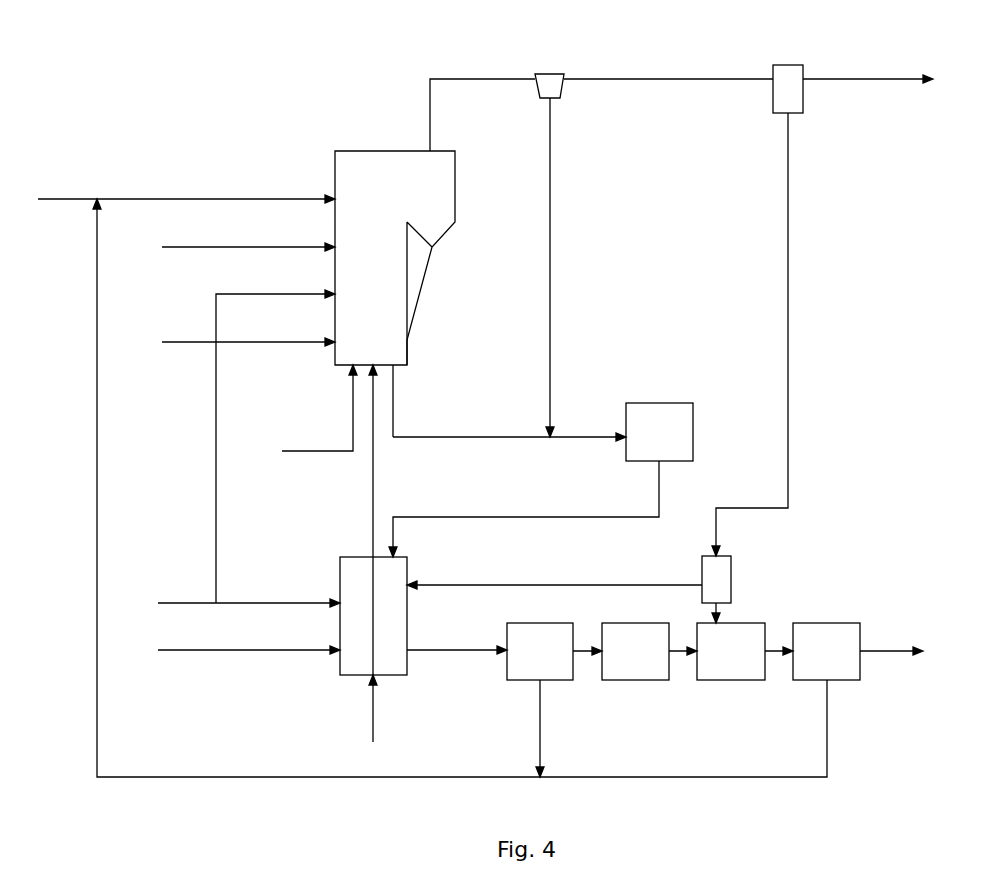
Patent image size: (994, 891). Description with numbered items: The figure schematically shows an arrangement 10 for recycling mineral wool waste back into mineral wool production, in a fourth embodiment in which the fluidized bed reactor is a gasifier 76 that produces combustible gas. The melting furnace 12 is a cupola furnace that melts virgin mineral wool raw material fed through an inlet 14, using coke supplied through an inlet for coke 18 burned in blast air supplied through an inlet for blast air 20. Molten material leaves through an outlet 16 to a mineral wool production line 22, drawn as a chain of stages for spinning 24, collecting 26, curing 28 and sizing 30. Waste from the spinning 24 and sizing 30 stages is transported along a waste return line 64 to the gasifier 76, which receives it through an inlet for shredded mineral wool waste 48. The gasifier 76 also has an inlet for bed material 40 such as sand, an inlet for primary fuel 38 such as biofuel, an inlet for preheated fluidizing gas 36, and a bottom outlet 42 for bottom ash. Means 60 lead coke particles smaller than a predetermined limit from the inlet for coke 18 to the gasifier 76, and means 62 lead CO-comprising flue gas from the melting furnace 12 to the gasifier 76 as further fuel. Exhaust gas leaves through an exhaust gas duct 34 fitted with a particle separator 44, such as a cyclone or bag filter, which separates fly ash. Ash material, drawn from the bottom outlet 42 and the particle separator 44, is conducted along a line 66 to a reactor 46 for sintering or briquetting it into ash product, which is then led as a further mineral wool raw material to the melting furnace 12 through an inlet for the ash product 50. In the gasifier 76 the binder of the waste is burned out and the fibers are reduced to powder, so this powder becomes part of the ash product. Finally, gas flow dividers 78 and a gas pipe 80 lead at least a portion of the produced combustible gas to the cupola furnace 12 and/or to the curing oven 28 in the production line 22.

The arrangement 10 is at (258, 100).
The melting furnace 12 is at (373, 616).
The inlet for virgin mineral wool raw material 14 is at (255, 655).
The outlet for molten mineral wool material 16 is at (470, 655).
The inlet for coke 18 is at (308, 602).
The inlet for blast air 20 is at (373, 718).
The mineral wool production line 22 is at (715, 695).
The spinning stage 24 is at (540, 651).
The collecting stage 26 is at (635, 651).
The curing stage 28 is at (731, 651).
The sizing stage 30 is at (826, 651).
The exhaust gas duct 34 is at (480, 78).
The inlet for preheated fluidizing gas 36 is at (352, 385).
The inlet for primary fuel 38 is at (318, 340).
The inlet for bed material 40 is at (318, 245).
The bottom outlet 42 is at (393, 389).
The particle separator 44 is at (561, 95).
The reactor for sintering or briquetting 46 is at (659, 432).
The inlet for shredded mineral wool waste 48 is at (313, 197).
The inlet for ash product 50 is at (455, 517).
The means for leading under-size coke particles 60 is at (216, 465).
The means for leading CO-comprising flue gas 62 is at (372, 485).
The waste return line 64 is at (97, 488).
The line for ash material 66 is at (583, 433).
The gasifier 76 is at (395, 258).
The gas flow divider 78 is at (803, 102).
The gas pipe 80 is at (788, 314).